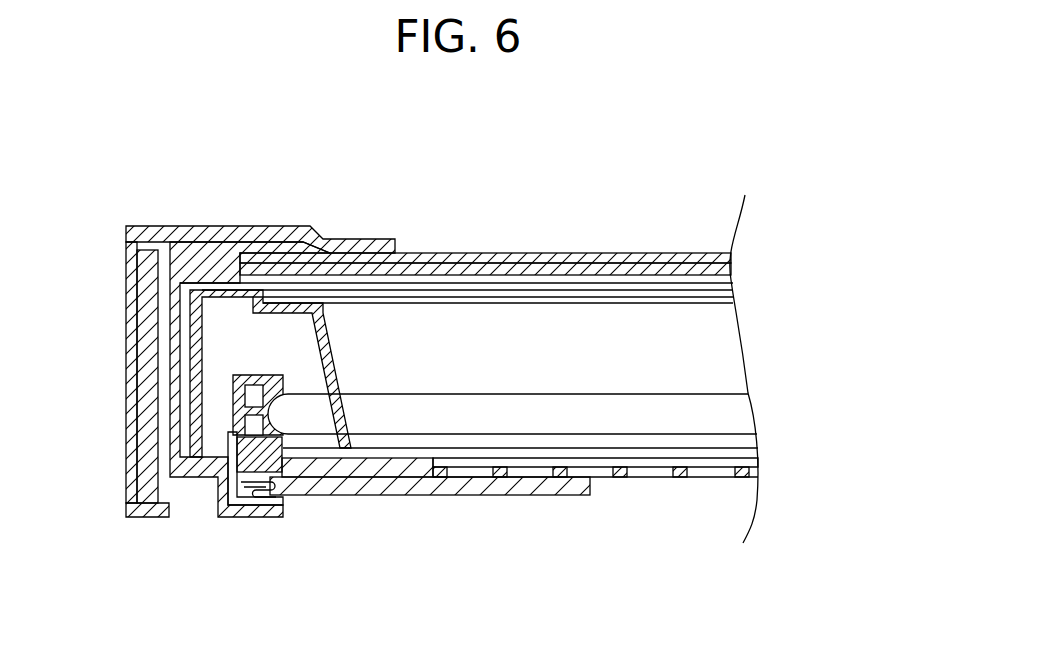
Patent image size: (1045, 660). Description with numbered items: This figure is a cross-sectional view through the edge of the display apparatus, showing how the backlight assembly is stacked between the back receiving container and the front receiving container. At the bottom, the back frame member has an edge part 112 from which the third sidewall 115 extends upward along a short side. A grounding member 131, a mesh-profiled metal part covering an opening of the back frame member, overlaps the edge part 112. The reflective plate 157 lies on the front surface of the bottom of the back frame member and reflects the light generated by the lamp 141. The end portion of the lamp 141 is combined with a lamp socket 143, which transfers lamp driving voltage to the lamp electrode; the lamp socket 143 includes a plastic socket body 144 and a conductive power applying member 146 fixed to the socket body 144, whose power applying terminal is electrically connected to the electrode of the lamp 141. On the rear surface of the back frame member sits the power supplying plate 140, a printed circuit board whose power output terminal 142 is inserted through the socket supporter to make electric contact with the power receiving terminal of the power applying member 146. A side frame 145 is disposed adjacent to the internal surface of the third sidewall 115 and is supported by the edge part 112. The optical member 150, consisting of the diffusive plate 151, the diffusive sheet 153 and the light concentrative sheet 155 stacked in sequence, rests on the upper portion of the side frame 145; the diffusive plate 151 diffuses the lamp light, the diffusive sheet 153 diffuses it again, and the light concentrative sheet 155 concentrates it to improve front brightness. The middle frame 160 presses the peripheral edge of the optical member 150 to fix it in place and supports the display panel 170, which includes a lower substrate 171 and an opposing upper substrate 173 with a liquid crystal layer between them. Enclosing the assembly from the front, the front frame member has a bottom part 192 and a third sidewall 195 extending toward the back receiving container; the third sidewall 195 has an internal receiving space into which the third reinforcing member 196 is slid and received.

The edge part 112 is at (347, 480).
The third sidewall 115 is at (183, 420).
The grounding member 131 is at (678, 462).
The power supplying plate 140 is at (417, 492).
The lamp 141 is at (533, 415).
The power output terminal 142 is at (264, 497).
The lamp socket 143 is at (228, 525).
The socket body 144 is at (218, 487).
The side frame 145 is at (180, 347).
The power applying member 146 is at (250, 493).
The optical member 150 is at (514, 288).
The diffusive plate 151 is at (737, 296).
The diffusive sheet 153 is at (737, 286).
The light concentrative sheet 155 is at (738, 278).
The reflective plate 157 is at (642, 458).
The middle frame 160 is at (172, 265).
The display panel 170 is at (485, 214).
The lower substrate 171 is at (535, 273).
The upper substrate 173 is at (513, 186).
The bottom part 192 is at (247, 236).
The third sidewall 195 is at (131, 307).
The third reinforcing member 196 is at (143, 467).